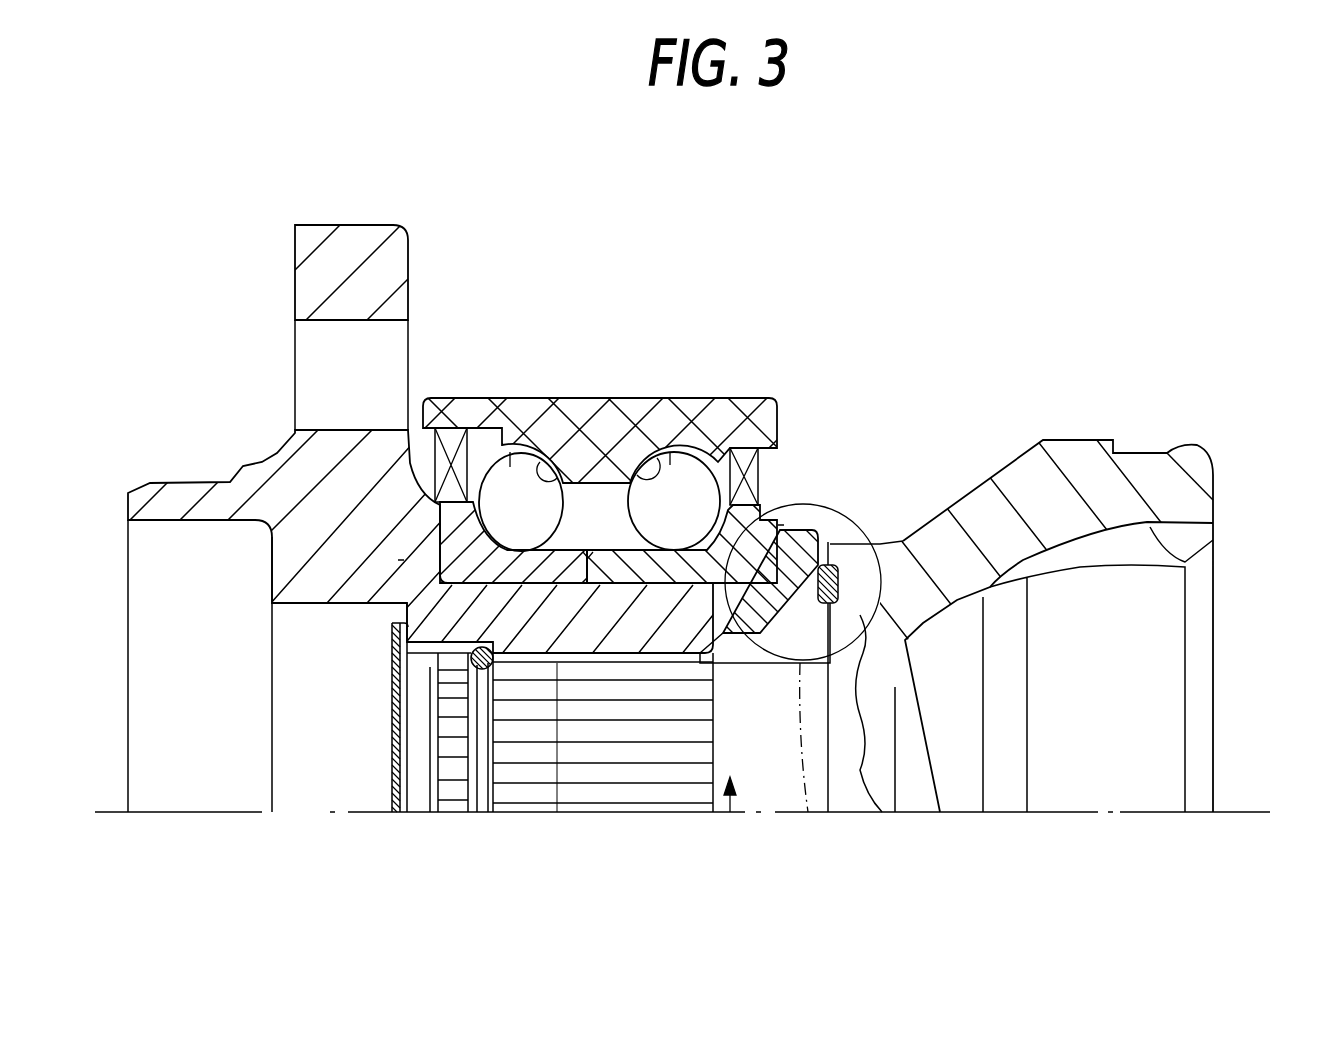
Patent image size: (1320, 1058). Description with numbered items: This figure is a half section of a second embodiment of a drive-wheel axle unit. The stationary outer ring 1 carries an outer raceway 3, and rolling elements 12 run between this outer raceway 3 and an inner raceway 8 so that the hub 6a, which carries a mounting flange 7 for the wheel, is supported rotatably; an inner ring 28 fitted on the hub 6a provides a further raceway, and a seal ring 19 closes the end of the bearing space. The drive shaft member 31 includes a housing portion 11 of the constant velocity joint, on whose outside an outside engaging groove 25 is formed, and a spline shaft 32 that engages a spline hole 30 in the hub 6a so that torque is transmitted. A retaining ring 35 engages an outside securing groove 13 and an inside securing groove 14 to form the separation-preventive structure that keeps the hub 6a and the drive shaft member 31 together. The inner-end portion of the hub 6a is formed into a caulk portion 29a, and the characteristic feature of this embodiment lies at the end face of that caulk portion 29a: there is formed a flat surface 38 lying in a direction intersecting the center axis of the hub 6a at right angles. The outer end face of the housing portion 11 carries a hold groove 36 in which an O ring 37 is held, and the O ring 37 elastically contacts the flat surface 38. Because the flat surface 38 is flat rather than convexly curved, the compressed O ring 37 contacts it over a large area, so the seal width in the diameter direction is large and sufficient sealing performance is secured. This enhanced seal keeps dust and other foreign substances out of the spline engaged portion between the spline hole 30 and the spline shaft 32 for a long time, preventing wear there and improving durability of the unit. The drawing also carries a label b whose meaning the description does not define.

The outer ring 1 is at (572, 490).
The outer raceway 3 is at (572, 512).
The hub 6a is at (228, 430).
The mounting flange 7 is at (348, 243).
The inner raceway 8 is at (484, 452).
The housing portion 11 is at (1015, 470).
The rolling element 12 is at (516, 452).
The outside securing groove 13 is at (470, 660).
The inside securing groove 14 is at (480, 800).
The seal ring 19 is at (453, 443).
The outside engaging groove 25 is at (1215, 545).
The inner ring 28 is at (398, 562).
The caulk portion 29a is at (810, 525).
The spline hole 30 is at (557, 812).
The drive shaft member 31 is at (732, 813).
The spline shaft 32 is at (655, 773).
The retaining ring 35 is at (481, 668).
The hold groove 36 is at (898, 542).
The O ring 37 is at (866, 620).
The flat surface 38 is at (840, 565).
The gap b is at (808, 813).